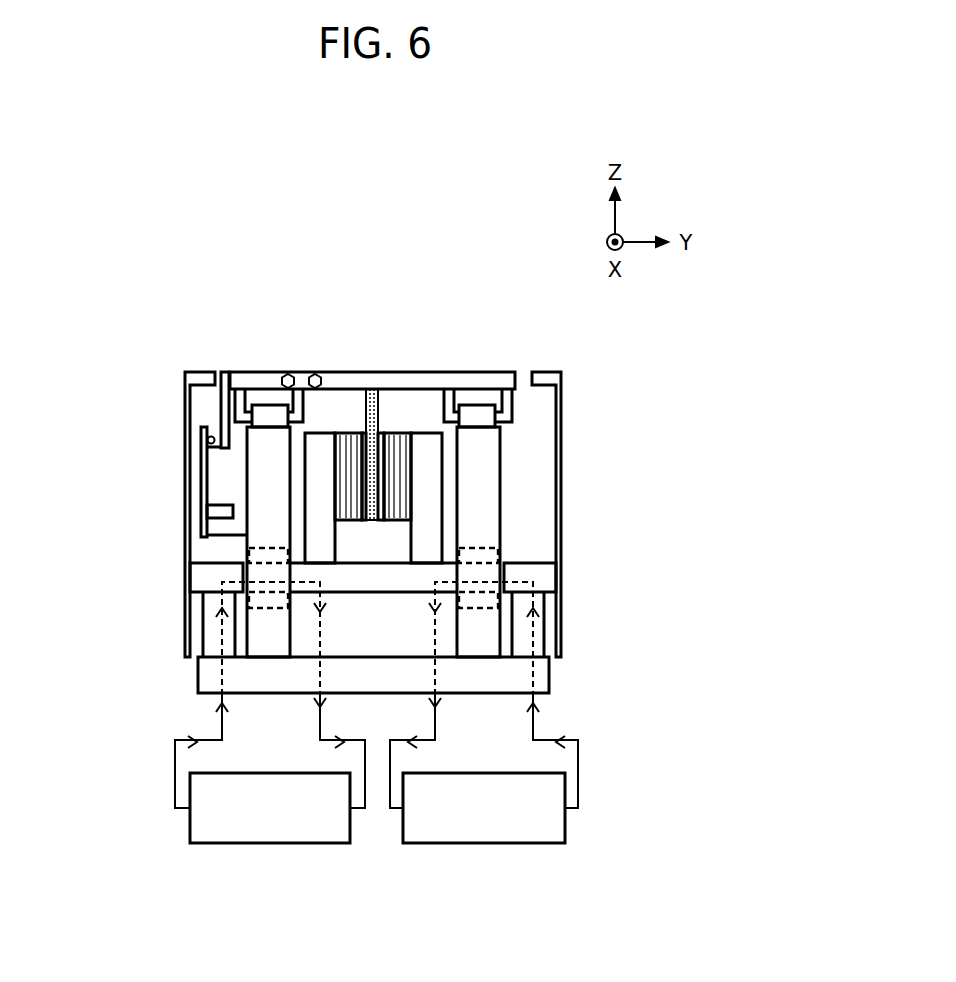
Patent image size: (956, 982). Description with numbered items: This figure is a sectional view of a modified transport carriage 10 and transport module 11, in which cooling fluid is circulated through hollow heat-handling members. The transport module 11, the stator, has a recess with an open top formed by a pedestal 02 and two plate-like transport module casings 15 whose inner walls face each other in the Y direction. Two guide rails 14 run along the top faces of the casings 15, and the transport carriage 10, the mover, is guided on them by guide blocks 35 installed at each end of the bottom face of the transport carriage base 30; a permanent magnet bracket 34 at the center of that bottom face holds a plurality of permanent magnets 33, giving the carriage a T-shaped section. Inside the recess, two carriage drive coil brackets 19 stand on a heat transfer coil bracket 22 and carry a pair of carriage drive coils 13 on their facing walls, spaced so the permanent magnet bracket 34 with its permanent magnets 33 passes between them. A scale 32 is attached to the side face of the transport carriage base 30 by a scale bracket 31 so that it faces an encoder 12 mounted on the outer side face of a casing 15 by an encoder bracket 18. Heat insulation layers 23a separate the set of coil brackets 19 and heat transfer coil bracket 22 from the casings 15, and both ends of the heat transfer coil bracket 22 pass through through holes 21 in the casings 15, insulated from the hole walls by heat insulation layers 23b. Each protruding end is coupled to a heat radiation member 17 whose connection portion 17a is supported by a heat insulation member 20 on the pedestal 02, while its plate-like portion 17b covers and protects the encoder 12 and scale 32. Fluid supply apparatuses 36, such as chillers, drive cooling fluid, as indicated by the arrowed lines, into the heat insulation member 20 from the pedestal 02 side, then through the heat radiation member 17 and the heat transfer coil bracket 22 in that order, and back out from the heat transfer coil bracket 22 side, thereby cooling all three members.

The transport carriage 10 is at (510, 287).
The transport module 11 is at (386, 903).
The encoder 12 is at (173, 482).
The carriage drive coil 13 is at (367, 426).
The guide rail 14 is at (429, 417).
The transport module casing 15 is at (373, 591).
The heat radiation member 17 is at (368, 566).
The connection portion 17a is at (371, 577).
The plate-like portion 17b is at (371, 545).
The encoder bracket 18 is at (185, 521).
The carriage drive coil bracket 19 is at (353, 498).
The heat insulation member 20 is at (395, 523).
The through hole 21 is at (374, 543).
The heat transfer coil bracket 22 is at (373, 656).
The heat insulation layer 23a is at (354, 450).
The heat insulation layer 23b is at (363, 654).
The transport carriage base 30 is at (395, 364).
The scale bracket 31 is at (173, 410).
The scale 32 is at (176, 428).
The permanent magnet 33 is at (365, 580).
The permanent magnet bracket 34 is at (371, 426).
The guide block 35 is at (371, 376).
The fluid supply apparatus 36 is at (376, 741).
The pedestal 02 is at (506, 716).